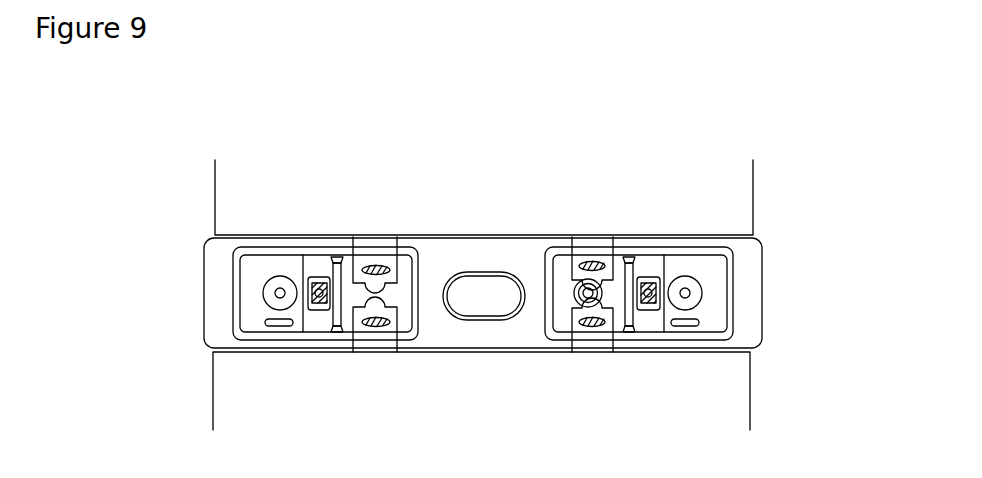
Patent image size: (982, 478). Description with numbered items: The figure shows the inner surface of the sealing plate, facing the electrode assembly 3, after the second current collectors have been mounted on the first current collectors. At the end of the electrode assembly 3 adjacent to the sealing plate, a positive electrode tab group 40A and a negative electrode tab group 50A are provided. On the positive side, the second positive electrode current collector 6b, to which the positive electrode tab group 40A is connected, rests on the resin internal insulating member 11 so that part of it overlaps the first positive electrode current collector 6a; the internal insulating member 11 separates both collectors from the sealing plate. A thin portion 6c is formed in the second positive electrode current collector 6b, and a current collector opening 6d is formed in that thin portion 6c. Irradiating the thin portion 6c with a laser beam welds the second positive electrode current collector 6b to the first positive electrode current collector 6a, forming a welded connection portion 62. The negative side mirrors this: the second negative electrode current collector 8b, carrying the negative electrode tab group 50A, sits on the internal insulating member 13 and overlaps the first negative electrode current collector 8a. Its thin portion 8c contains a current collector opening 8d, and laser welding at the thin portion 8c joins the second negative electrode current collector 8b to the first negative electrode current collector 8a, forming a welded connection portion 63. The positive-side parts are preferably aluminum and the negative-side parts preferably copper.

The electrode assembly 3 is at (732, 191).
The first positive electrode current collector 6a is at (703, 273).
The second positive electrode current collector 6b is at (563, 293).
The thin portion 6c is at (645, 312).
The current collector opening 6d is at (651, 257).
The first negative electrode current collector 8a is at (270, 271).
The second negative electrode current collector 8b is at (395, 292).
The thin portion 8c is at (318, 312).
The current collector opening 8d is at (324, 256).
The internal insulating member 11 is at (730, 322).
The internal insulating member 13 is at (237, 328).
The positive electrode tab group 40A is at (591, 256).
The negative electrode tab group 50A is at (373, 256).
The welded connection portion 62 is at (648, 310).
The welded connection portion 63 is at (321, 312).